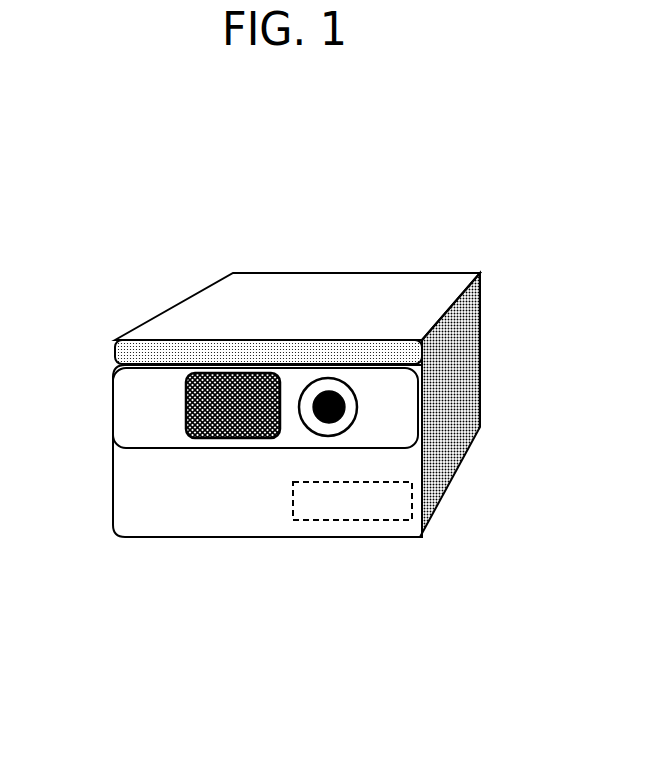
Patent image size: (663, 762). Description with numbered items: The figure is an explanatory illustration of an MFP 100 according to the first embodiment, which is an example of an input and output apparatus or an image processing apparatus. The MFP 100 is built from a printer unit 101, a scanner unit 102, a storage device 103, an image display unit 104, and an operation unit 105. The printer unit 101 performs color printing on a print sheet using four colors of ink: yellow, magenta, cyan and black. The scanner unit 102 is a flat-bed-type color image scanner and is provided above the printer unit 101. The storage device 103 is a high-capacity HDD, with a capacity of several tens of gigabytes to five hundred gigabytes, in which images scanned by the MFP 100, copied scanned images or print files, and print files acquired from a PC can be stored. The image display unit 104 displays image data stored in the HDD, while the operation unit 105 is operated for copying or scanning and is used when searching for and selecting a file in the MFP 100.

The MFP 100 is at (282, 150).
The printer unit 101 is at (470, 417).
The scanner unit 102 is at (280, 285).
The storage device 103 is at (368, 523).
The image display unit 104 is at (186, 407).
The operation unit 105 is at (357, 403).